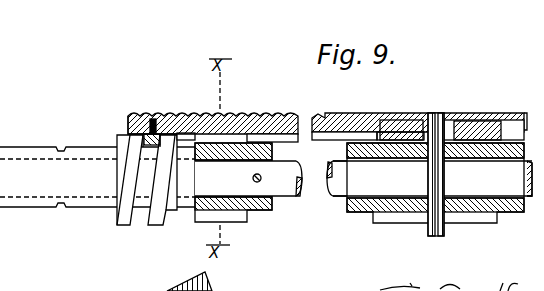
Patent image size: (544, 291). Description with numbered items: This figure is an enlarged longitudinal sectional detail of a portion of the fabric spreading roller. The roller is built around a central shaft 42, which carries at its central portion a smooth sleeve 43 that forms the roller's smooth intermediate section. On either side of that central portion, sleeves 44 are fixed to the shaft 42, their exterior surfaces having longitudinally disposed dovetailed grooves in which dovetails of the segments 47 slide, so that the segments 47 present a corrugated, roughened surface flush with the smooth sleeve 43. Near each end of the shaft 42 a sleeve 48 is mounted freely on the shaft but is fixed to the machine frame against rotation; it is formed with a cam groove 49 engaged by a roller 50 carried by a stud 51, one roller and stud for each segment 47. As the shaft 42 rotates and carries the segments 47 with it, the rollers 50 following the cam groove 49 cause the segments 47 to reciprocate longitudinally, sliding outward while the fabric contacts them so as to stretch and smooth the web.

The central shaft 42 is at (285, 187).
The smooth sleeve 43 is at (393, 114).
The sleeve 44 is at (195, 216).
The segment 47 is at (262, 115).
The sleeve 48 is at (97, 208).
The cam groove 49 is at (140, 213).
The roller 50 is at (127, 126).
The stud 51 is at (153, 122).